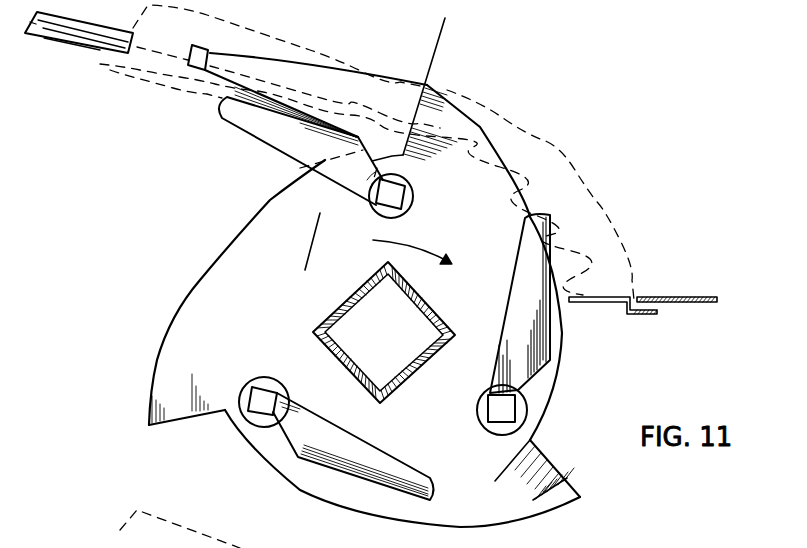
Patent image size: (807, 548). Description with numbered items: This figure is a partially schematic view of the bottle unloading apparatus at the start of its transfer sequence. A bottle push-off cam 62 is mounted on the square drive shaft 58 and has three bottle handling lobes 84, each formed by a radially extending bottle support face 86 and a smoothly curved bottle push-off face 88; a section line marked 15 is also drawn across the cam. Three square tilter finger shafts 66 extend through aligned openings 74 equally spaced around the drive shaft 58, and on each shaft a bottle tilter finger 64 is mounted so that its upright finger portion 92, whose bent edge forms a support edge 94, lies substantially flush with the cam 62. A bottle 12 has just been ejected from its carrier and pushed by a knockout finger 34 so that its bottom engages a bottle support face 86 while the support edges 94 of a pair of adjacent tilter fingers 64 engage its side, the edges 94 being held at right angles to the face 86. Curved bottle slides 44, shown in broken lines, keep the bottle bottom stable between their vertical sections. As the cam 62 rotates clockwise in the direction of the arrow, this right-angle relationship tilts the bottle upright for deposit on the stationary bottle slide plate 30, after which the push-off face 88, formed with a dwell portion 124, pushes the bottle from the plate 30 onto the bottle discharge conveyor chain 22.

The bottle 12 is at (302, 77).
The section line 15 is at (388, 32).
The bottle discharge conveyor chain 22 is at (700, 296).
The stationary bottle slide plate 30 is at (605, 296).
The knockout fingers 34 is at (53, 27).
The curved bottle slides 44 is at (533, 140).
The square drive shaft 58 is at (337, 308).
The bottle push-off cam 62 is at (211, 261).
The bottle tilter finger 64 is at (286, 160).
The square tilter finger shaft 66 is at (410, 190).
The aligned openings 74 is at (401, 208).
The bottle handling lobe 84 is at (450, 127).
The bottle support face 86 is at (388, 104).
The bottle push-off face 88 is at (453, 118).
The upright finger portion 92 is at (258, 142).
The support edge 94 is at (317, 127).
The dwell formation of cam face 124 is at (300, 173).